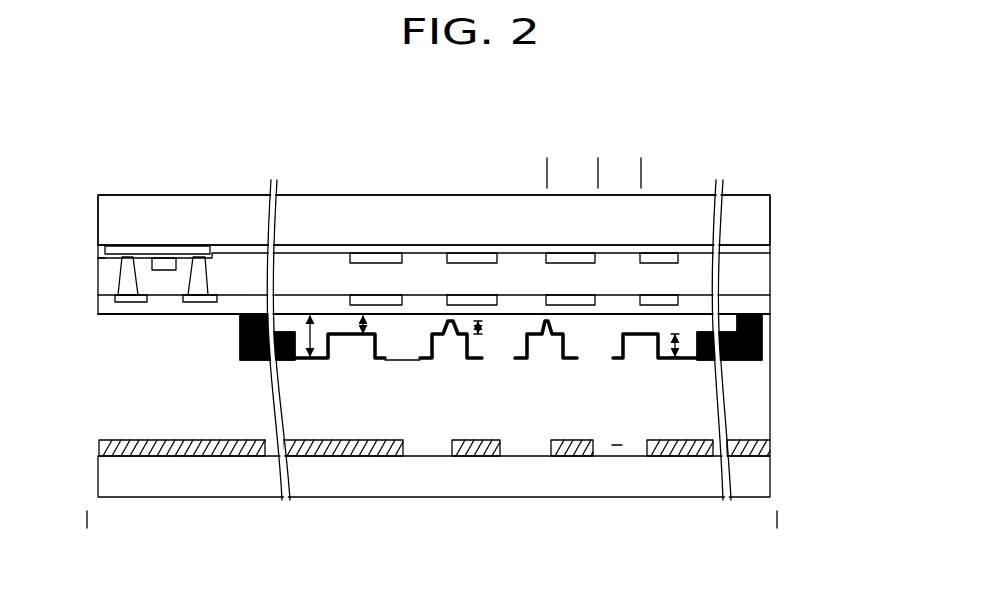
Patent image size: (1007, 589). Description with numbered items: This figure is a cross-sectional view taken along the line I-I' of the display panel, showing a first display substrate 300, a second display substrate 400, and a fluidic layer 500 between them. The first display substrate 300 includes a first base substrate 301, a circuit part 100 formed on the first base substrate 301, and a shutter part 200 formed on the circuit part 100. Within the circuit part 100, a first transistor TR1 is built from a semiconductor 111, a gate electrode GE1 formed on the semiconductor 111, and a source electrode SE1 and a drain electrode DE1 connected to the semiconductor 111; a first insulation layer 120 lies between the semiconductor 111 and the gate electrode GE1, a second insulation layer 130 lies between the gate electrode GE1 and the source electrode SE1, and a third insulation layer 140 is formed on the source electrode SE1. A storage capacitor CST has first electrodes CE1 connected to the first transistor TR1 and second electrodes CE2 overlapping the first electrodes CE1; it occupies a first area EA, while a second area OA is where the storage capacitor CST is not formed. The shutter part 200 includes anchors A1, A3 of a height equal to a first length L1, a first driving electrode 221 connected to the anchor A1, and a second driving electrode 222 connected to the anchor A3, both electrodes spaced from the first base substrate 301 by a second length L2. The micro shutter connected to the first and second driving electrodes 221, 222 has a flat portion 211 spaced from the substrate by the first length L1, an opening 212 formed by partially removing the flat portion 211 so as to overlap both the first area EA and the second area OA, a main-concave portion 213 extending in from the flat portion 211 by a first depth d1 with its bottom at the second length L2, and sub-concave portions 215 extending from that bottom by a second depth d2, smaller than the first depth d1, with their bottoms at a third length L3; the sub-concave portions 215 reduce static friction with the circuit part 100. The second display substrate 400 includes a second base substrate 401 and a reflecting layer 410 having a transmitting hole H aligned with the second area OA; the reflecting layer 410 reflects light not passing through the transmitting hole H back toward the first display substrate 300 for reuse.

The first display substrate 300 is at (840, 193).
The first base substrate 301 is at (772, 218).
The circuit part 100 is at (432, 210).
The semiconductor 111 is at (103, 246).
The first insulation layer 120 is at (99, 257).
The second insulation layer 130 is at (103, 282).
The third insulation layer 140 is at (103, 307).
The first transistor TR1 is at (160, 202).
The drain electrode DE1 is at (127, 257).
The gate electrode GE1 is at (163, 265).
The source electrode SE1 is at (198, 257).
The storage capacitor CST is at (495, 203).
The first electrode CE1 is at (376, 263).
The second electrode CE2 is at (352, 305).
The first area EA is at (597, 163).
The second area OA is at (640, 163).
The shutter part 200 is at (507, 411).
The second driving electrode 222 is at (250, 362).
The flat portion 211 is at (322, 360).
The opening 212 is at (398, 358).
The sub-concave portion 215 is at (448, 336).
The main-concave portion 213 is at (642, 360).
The first driving electrode 221 is at (743, 360).
The anchor A1 is at (762, 318).
The anchor A3 is at (248, 360).
The first length L1 is at (310, 316).
The second length L2 is at (365, 322).
The third length L3 is at (547, 319).
The first depth d1 is at (678, 342).
The second depth d2 is at (486, 327).
The fluidic layer 500 is at (98, 316).
The second display substrate 400 is at (431, 498).
The reflecting layer 410 is at (99, 446).
The second base substrate 401 is at (103, 473).
The transmitting hole H is at (617, 445).
The section line I is at (436, 517).